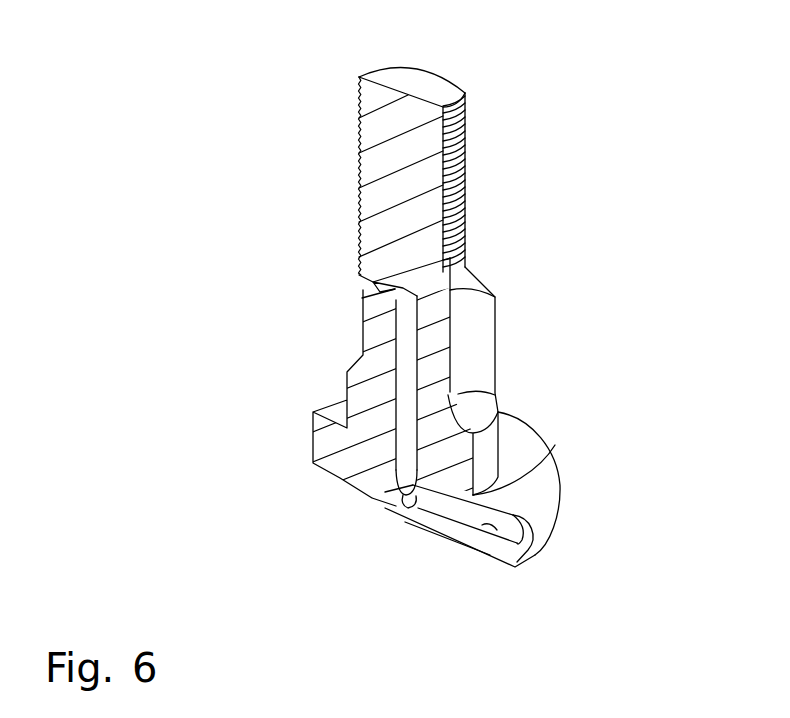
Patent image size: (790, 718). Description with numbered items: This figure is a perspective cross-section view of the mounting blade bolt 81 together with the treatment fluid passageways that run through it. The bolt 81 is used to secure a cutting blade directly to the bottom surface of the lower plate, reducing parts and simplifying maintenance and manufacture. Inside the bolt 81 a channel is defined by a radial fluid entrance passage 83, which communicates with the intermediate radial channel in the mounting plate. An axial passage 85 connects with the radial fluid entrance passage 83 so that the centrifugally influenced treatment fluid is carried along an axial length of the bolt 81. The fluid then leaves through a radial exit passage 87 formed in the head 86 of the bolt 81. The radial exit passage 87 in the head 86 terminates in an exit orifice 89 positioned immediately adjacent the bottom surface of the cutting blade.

The mounting blade bolt 81 is at (530, 174).
The radial fluid entrance passage 83 is at (368, 283).
The axial passage 85 is at (397, 420).
The head 86 is at (377, 497).
The radial exit passage 87 is at (490, 548).
The exit orifice 89 is at (537, 553).